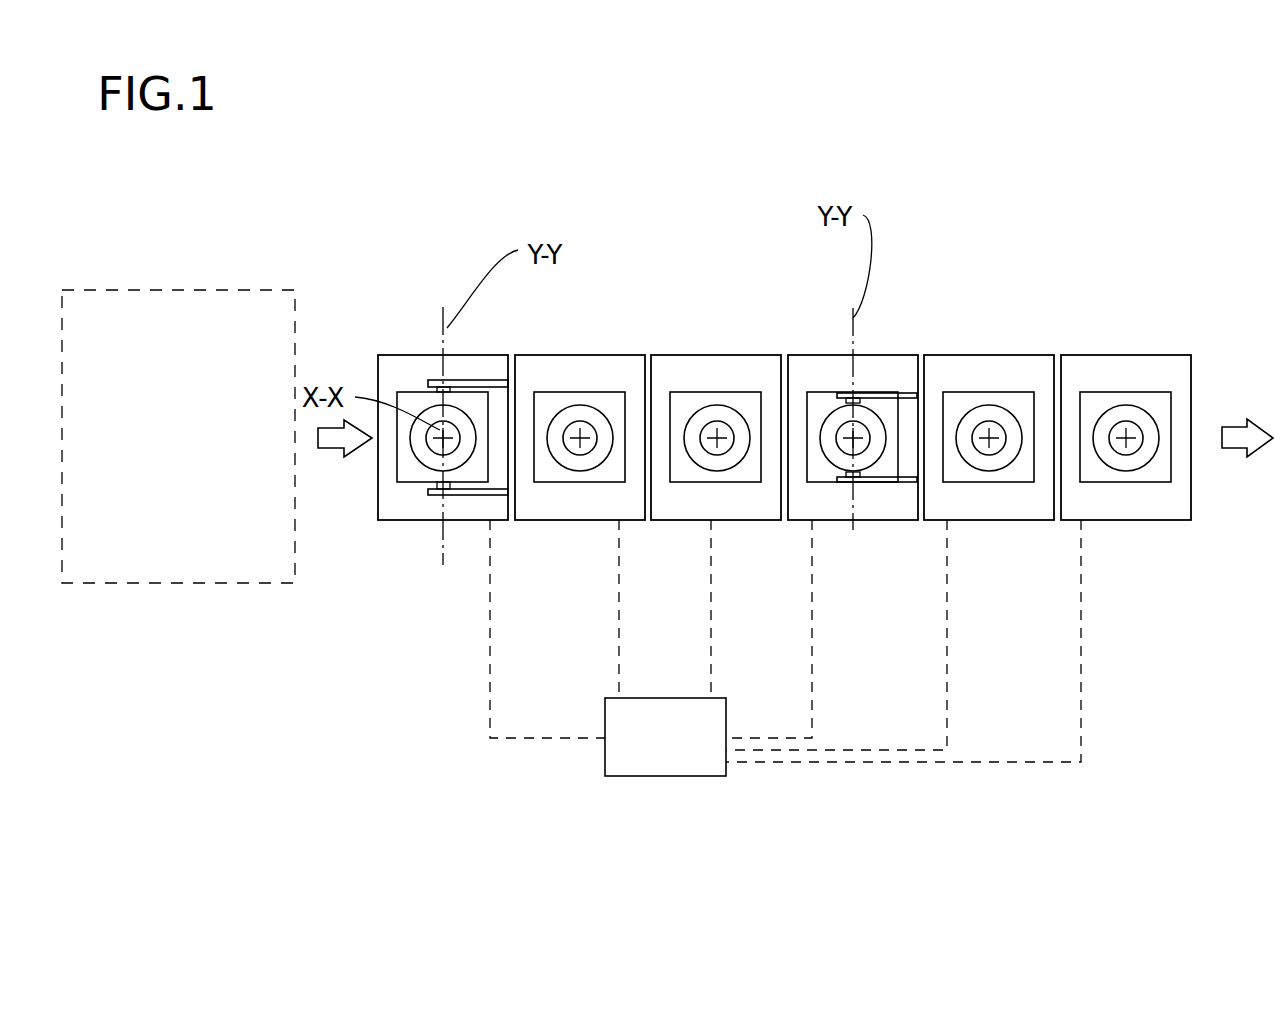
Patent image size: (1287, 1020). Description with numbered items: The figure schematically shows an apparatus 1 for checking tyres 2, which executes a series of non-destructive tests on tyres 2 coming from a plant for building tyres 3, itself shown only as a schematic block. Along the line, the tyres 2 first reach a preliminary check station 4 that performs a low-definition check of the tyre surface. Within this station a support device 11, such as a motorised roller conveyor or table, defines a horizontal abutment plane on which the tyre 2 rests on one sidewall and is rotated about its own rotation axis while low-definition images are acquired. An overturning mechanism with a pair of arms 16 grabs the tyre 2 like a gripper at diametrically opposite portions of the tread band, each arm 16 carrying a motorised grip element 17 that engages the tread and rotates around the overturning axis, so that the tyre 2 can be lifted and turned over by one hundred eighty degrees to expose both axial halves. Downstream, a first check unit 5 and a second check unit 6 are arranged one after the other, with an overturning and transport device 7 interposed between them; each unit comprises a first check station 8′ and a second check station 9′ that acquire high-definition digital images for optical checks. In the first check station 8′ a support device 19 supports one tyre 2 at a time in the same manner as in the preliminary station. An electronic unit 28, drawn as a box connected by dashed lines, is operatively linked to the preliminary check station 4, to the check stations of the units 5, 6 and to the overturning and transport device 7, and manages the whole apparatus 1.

The apparatus for checking tyres 1 is at (728, 217).
The tyre 2 is at (465, 463).
The plant for building tyres 3 is at (281, 270).
The preliminary check station 4 is at (409, 348).
The first check unit 5 is at (651, 341).
The second check unit 6 is at (1061, 346).
The overturning and transport device 7 is at (881, 348).
The first check station 8′ is at (552, 529).
The second check station 9′ is at (687, 529).
The support device 11 is at (408, 473).
The arms 16 is at (432, 380).
The motorised grip element 17 is at (437, 390).
The support device 19 is at (556, 403).
The electronic unit 28 is at (686, 757).